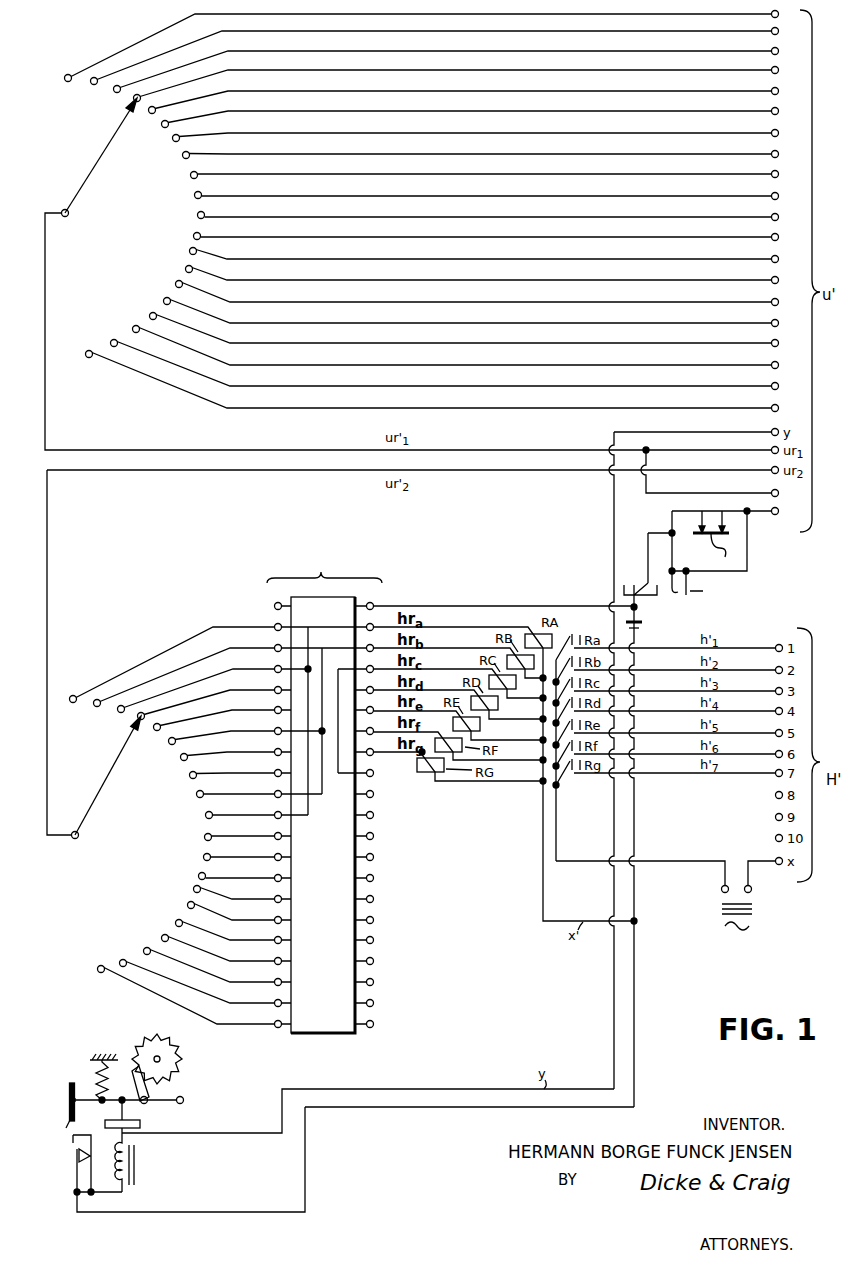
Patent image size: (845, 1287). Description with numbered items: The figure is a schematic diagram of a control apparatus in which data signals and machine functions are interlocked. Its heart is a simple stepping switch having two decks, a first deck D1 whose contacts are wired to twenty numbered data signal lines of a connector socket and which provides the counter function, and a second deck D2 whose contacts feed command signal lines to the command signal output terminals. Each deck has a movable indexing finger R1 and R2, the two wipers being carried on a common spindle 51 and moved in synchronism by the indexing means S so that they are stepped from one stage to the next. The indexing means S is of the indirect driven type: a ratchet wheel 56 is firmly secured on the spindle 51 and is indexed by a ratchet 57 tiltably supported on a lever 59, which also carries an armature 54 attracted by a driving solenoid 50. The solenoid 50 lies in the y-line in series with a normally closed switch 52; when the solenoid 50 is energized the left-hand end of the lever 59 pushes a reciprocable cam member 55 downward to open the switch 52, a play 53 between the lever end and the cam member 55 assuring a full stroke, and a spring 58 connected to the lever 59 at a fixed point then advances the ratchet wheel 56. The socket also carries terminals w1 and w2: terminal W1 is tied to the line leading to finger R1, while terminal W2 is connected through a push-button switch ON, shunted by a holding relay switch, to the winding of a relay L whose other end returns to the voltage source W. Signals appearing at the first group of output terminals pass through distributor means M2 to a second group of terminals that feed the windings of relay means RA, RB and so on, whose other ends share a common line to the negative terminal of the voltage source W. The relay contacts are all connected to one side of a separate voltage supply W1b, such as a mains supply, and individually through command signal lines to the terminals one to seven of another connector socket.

The driving solenoid 50 is at (137, 1163).
The spindle 51 is at (181, 1060).
The normally closed switch 52 is at (75, 1170).
The play 53 is at (70, 1097).
The armature 54 is at (139, 1123).
The cam member 55 is at (70, 1123).
The ratchet wheel 56 is at (147, 1038).
The ratchet 57 is at (136, 1081).
The spring 58 is at (99, 1071).
The lever 59 is at (76, 1101).
The first deck D1 is at (426, 217).
The second deck D2 is at (167, 818).
The indexing finger of first deck R1 is at (95, 173).
The indexing finger of second deck R2 is at (104, 779).
The distributor means M2 is at (329, 787).
The indexing means S is at (186, 1121).
The voltage source W is at (647, 627).
The terminal w1 W1 is at (722, 477).
The separate voltage supply W1b is at (757, 907).
The terminal w2 W2 is at (737, 513).
The relay L is at (633, 582).
The push-button switch ON is at (697, 555).